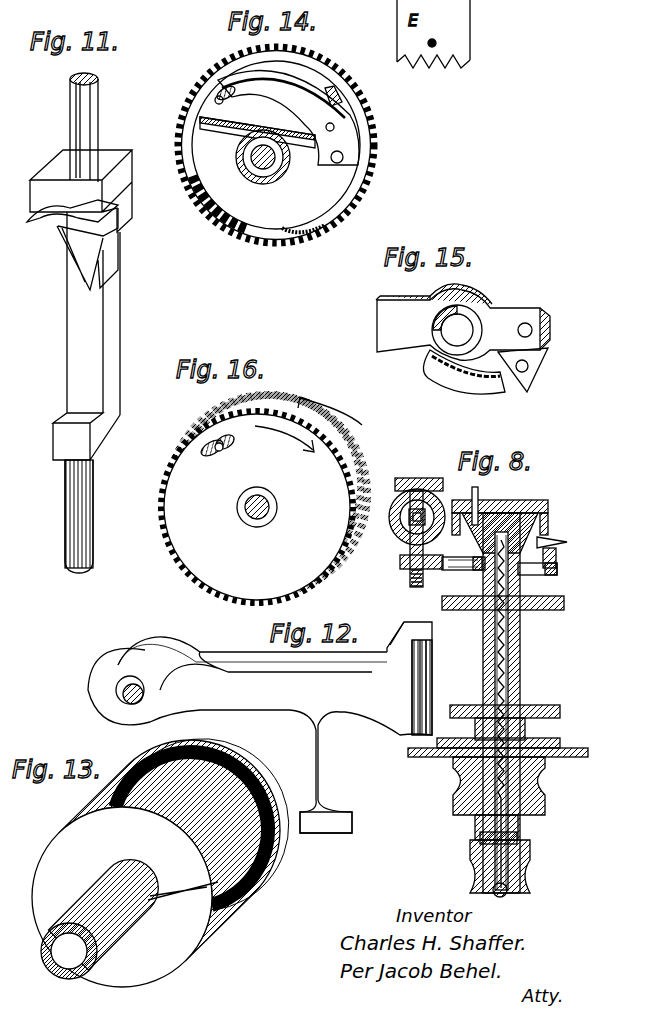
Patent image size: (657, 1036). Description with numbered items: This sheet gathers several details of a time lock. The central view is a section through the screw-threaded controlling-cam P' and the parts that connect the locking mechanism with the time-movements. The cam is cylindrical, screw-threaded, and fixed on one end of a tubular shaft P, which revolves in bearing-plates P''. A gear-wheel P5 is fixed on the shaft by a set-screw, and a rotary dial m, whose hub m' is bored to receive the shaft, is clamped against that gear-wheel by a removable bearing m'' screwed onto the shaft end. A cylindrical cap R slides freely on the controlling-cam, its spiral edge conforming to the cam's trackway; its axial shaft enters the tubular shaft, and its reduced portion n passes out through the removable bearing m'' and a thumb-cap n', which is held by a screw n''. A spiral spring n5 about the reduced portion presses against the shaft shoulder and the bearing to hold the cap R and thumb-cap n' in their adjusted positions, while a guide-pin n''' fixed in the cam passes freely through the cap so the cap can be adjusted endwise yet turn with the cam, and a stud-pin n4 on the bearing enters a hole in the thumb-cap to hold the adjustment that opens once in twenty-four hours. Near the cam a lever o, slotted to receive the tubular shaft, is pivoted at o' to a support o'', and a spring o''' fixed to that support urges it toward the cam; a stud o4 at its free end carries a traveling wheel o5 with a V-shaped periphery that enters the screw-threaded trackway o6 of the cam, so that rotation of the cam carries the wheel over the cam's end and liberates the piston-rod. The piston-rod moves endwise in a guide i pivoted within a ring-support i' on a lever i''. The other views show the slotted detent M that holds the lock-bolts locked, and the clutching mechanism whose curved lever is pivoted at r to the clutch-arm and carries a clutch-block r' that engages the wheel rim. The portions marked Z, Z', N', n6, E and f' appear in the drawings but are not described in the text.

In FIG. 11, the sliding block Z is at (81, 152).
In FIG. 11, the curved lip of block Z' is at (72, 211).
In FIG. 11, the slide bar N' is at (86, 392).
In FIG. 11, the reduced outer portion of the axial shaft n is at (82, 248).
In FIG. 14, the reduced outer portion of the axial shaft n is at (276, 141).
In FIG. 15, the reduced outer portion of the axial shaft n is at (528, 329).
In FIG. 16, the reduced outer portion of the axial shaft n is at (278, 492).
In FIG. 8, the reduced outer portion of the axial shaft n is at (476, 651).
In FIG. 11, the thumb-cap n' is at (57, 242).
In FIG. 16, the thumb-cap n' is at (261, 500).
In FIG. 8, the thumb-cap n' is at (509, 866).
In FIG. 16, the screw n'' is at (225, 447).
In FIG. 8, the screw n'' is at (500, 897).
In FIG. 14, the guide-pin n''' is at (227, 118).
In FIG. 15, the guide-pin n''' is at (458, 322).
In FIG. 16, the guide-pin n''' is at (217, 439).
In FIG. 8, the guide-pin n''' is at (487, 502).
In FIG. 14, the stud-pin n4 is at (255, 132).
In FIG. 15, the stud-pin n4 is at (378, 326).
In FIG. 8, the stud-pin n4 is at (517, 840).
In FIG. 14, the spiral spring n5 is at (258, 203).
In FIG. 15, the spiral spring n5 is at (444, 363).
In FIG. 8, the spiral spring n5 is at (510, 690).
In FIG. 11, the pawl n6 is at (87, 249).
In FIG. 14, the pawl n6 is at (306, 98).
In FIG. 15, the pawl n6 is at (464, 372).
In FIG. 14, the pivotal connection of the curved lever r is at (288, 157).
In FIG. 15, the clutch-block r' is at (526, 370).
In FIG. 14, the plate E is at (333, 96).
In FIG. 8, the cylindrical cap R is at (512, 500).
In FIG. 8, the tubular shaft P is at (506, 703).
In FIG. 13, the tubular shaft P is at (99, 919).
In FIG. 8, the controlling-cam P' is at (558, 511).
In FIG. 13, the controlling-cam P' is at (160, 863).
In FIG. 8, the bearing-plates P'' is at (513, 668).
In FIG. 8, the gear-wheel P5 is at (560, 743).
In FIG. 8, the guide i is at (413, 517).
In FIG. 8, the ring-support i' is at (402, 539).
In FIG. 8, the lever i'' is at (419, 477).
In FIG. 8, the slotted lever o is at (548, 571).
In FIG. 8, the pivot of the slotted lever o' is at (457, 572).
In FIG. 8, the support o'' is at (411, 564).
In FIG. 8, the spring o''' is at (471, 572).
In FIG. 8, the stud o4 is at (564, 558).
In FIG. 8, the traveling wheel o5 is at (562, 544).
In FIG. 8, the screw-threaded trackway o6 is at (453, 546).
In FIG. 13, the screw-threaded trackway o6 is at (183, 884).
In FIG. 8, the rotary dial m is at (498, 781).
In FIG. 8, the hub m' is at (550, 786).
In FIG. 8, the removable bearing m'' is at (518, 827).
In FIG. 12, the detent M is at (260, 727).
In FIG. 12, the foot f' is at (326, 820).